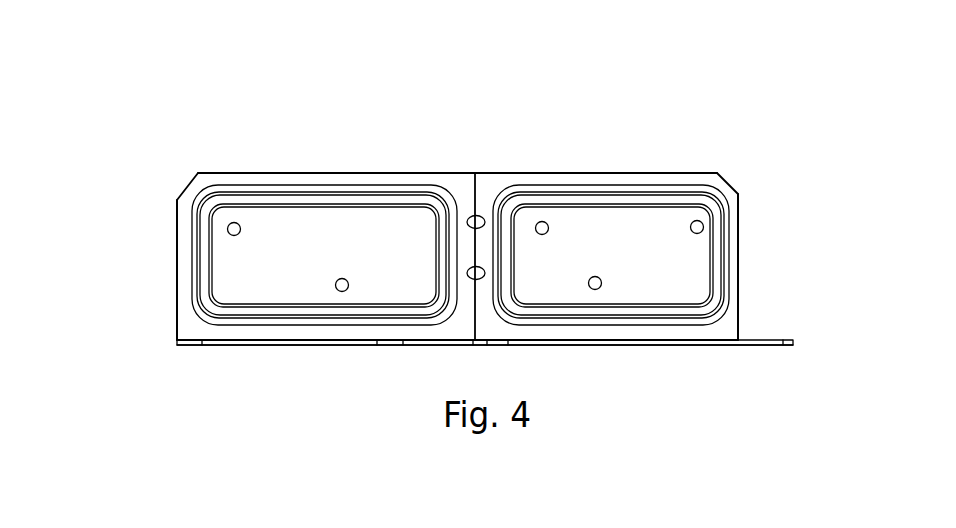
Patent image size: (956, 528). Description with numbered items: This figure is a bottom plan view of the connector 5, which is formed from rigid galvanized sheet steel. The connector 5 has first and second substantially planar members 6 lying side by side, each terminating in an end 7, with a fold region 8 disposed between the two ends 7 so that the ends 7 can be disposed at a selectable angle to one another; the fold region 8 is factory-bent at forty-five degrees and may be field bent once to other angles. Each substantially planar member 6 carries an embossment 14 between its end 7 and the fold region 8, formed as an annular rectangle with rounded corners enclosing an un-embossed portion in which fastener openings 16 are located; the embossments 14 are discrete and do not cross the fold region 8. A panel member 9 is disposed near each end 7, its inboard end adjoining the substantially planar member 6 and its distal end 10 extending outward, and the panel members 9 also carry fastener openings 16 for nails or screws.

The connector 5 is at (198, 174).
The substantially planar member 6 is at (256, 174).
The end 7 is at (177, 256).
The fold region 8 is at (478, 191).
The panel member 9 is at (256, 345).
The distal end 10 is at (310, 346).
The embossment 14 is at (368, 195).
The fastener opening 16 is at (342, 278).